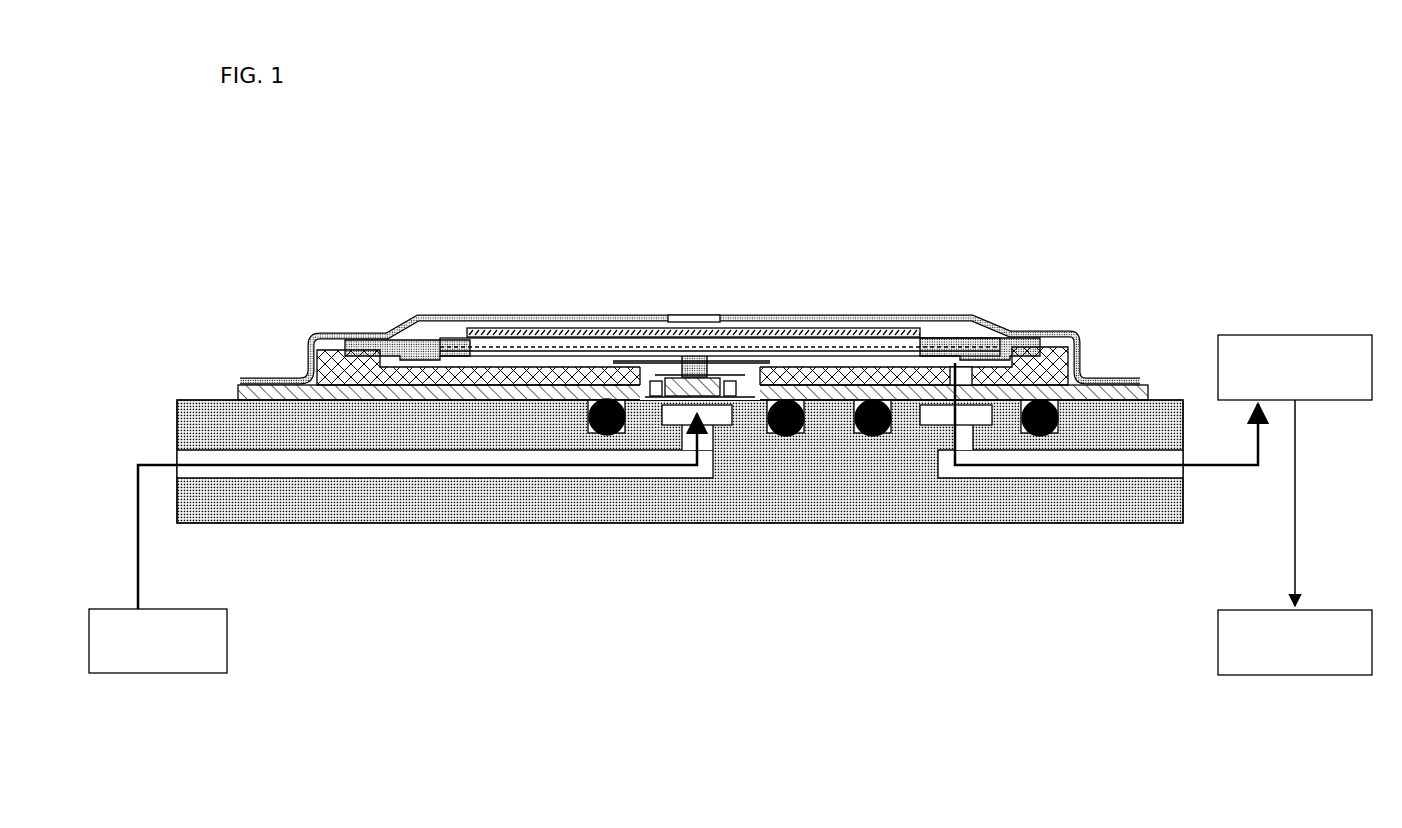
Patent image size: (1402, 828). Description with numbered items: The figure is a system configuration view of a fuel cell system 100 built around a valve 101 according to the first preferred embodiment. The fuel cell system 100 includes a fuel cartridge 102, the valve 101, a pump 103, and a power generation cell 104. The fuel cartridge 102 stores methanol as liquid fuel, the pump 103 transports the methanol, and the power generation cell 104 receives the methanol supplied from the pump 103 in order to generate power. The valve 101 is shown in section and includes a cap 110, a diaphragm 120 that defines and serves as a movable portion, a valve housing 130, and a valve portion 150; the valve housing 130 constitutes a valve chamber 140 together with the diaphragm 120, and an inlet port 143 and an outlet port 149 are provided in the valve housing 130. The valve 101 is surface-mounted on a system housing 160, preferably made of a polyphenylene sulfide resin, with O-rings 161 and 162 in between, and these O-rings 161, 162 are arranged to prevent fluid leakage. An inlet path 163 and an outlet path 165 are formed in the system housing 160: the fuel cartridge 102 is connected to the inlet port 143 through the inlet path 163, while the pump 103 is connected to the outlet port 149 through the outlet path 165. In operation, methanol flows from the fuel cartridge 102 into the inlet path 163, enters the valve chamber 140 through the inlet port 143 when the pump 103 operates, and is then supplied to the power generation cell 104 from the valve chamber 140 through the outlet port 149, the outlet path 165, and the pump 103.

The fuel cell system 100 is at (698, 385).
The valve 101 is at (693, 394).
The fuel cartridge 102 is at (228, 640).
The pump 103 is at (1352, 334).
The power generation cell 104 is at (1352, 608).
The cap 110 is at (508, 314).
The diaphragm 120 is at (592, 345).
The valve housing 130 is at (333, 357).
The valve chamber 140 is at (852, 366).
The inlet port 143 is at (712, 355).
The outlet port 149 is at (990, 350).
The valve portion 150 is at (746, 405).
The system housing 160 is at (712, 493).
The O-ring 161 is at (621, 430).
The O-ring 162 is at (878, 430).
The inlet path 163 is at (340, 473).
The outlet path 165 is at (1163, 472).